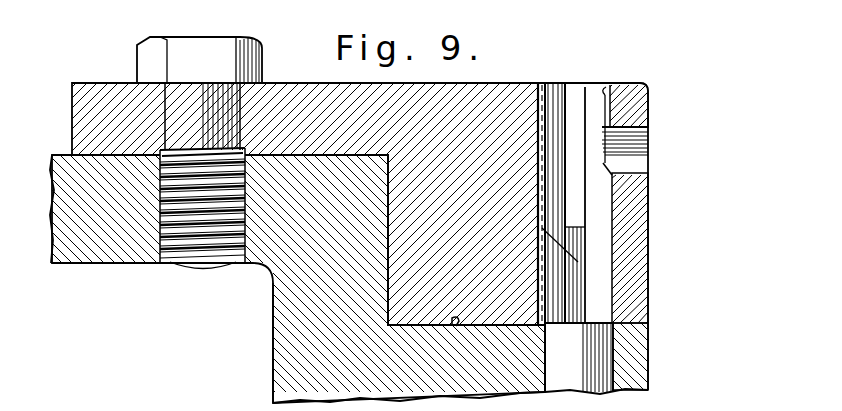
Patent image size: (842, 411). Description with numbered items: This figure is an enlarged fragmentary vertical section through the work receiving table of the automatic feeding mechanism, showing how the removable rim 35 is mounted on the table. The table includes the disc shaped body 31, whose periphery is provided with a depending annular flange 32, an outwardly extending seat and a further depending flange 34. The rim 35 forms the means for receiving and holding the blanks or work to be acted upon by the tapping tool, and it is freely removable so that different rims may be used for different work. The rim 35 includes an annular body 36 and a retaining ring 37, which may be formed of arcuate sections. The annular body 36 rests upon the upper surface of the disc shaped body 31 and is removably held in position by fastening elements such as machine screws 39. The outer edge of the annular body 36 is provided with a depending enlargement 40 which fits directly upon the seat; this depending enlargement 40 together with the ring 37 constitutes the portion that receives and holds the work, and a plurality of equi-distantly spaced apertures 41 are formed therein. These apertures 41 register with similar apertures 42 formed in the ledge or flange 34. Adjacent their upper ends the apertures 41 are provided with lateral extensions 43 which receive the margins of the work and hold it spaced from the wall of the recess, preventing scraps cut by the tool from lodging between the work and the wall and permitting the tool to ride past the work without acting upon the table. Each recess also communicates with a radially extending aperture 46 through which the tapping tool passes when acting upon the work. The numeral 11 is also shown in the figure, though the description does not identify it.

The upper body block 11 is at (268, 200).
The disc shaped body 31 is at (118, 228).
The depending annular flange 32 is at (342, 313).
The depending flange 34 is at (650, 373).
The rim 35 is at (460, 168).
The annular body 36 is at (493, 81).
The retaining ring 37 is at (623, 242).
The machine screws 39 is at (190, 48).
The depending enlargement 40 is at (455, 321).
The apertures 41 is at (612, 92).
The apertures 42 is at (613, 367).
The lateral extensions 43 is at (567, 113).
The radially extending aperture 46 is at (650, 130).